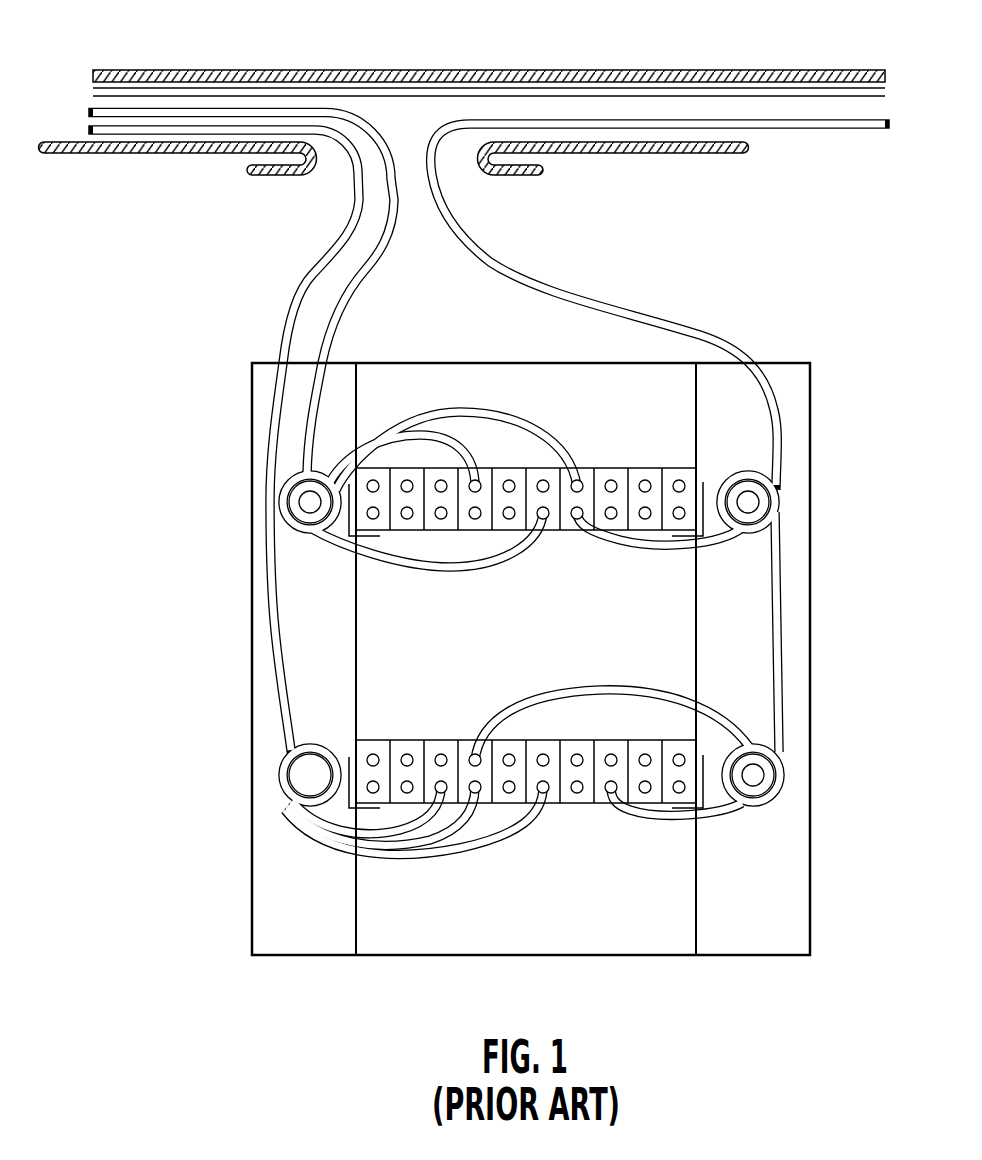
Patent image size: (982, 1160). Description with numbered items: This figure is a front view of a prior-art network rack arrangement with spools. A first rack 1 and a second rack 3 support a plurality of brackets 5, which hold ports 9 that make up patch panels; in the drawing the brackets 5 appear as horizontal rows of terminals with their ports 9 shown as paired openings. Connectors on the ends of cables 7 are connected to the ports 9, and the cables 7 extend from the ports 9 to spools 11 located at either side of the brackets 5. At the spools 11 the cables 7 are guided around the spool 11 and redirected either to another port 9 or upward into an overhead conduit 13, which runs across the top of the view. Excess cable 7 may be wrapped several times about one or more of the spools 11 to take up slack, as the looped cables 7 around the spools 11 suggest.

The first rack 1 is at (288, 957).
The second rack 3 is at (740, 957).
The bracket 5 is at (555, 535).
The cable 7 is at (365, 272).
The port 9 is at (645, 483).
The spool 11 is at (767, 500).
The overhead conduit 13 is at (607, 70).